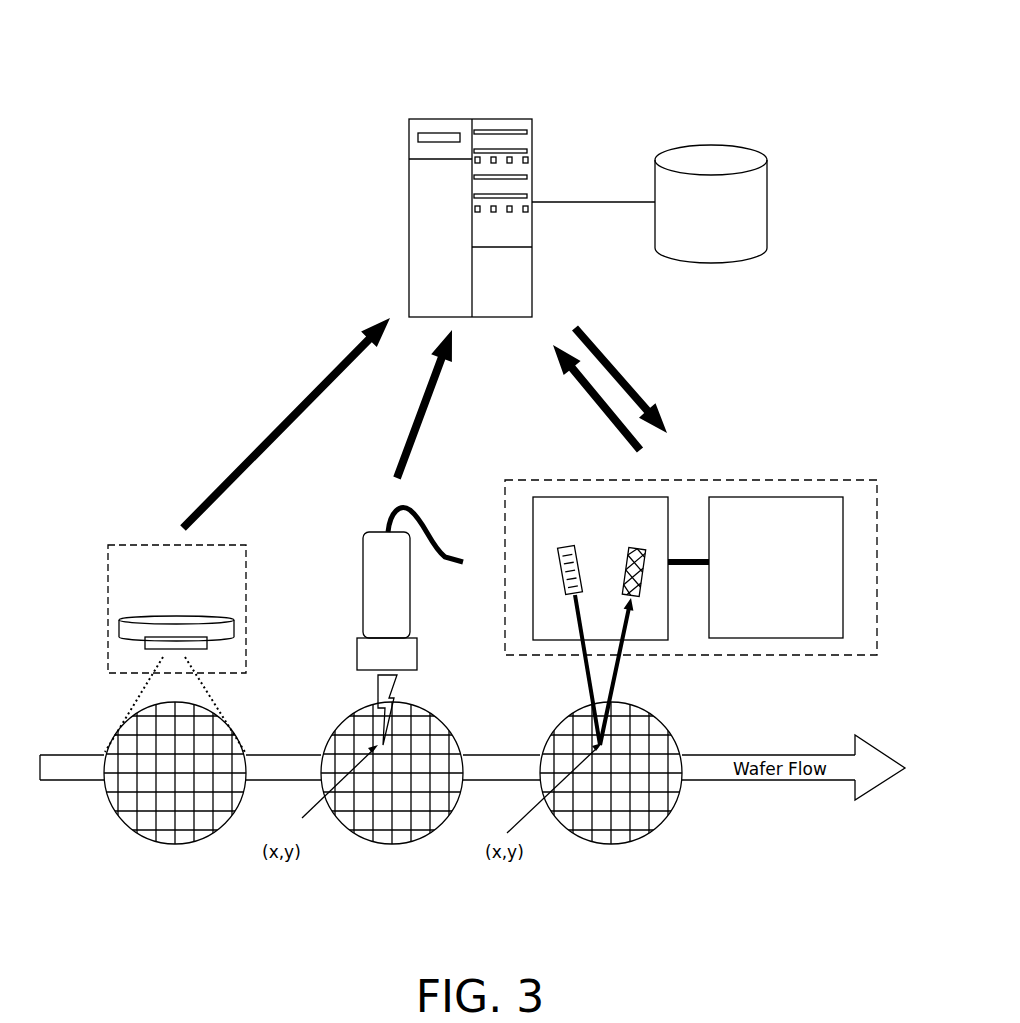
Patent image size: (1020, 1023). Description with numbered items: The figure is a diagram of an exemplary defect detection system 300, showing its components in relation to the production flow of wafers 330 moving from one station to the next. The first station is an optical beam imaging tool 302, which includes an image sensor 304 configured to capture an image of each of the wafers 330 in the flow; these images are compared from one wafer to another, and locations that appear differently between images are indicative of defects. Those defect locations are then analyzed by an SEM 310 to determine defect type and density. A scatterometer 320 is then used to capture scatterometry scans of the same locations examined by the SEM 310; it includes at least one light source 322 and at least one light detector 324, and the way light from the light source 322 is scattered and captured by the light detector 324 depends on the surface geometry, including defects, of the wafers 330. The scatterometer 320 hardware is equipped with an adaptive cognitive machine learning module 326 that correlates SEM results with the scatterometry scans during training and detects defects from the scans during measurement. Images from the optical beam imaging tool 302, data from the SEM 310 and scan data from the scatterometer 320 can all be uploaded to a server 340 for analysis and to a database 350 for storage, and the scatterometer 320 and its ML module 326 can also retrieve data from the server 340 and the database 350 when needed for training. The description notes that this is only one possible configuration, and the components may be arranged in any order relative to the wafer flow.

The defect detection system 300 is at (722, 79).
The optical beam imaging tool 302 is at (133, 648).
The image sensor 304 is at (128, 647).
The SEM 310 is at (363, 583).
The scatterometer 320 is at (697, 612).
The light source 322 is at (558, 567).
The light detector 324 is at (648, 578).
The ML module 326 is at (843, 569).
The wafers 330 is at (147, 858).
The server 340 is at (409, 192).
The database 350 is at (766, 235).